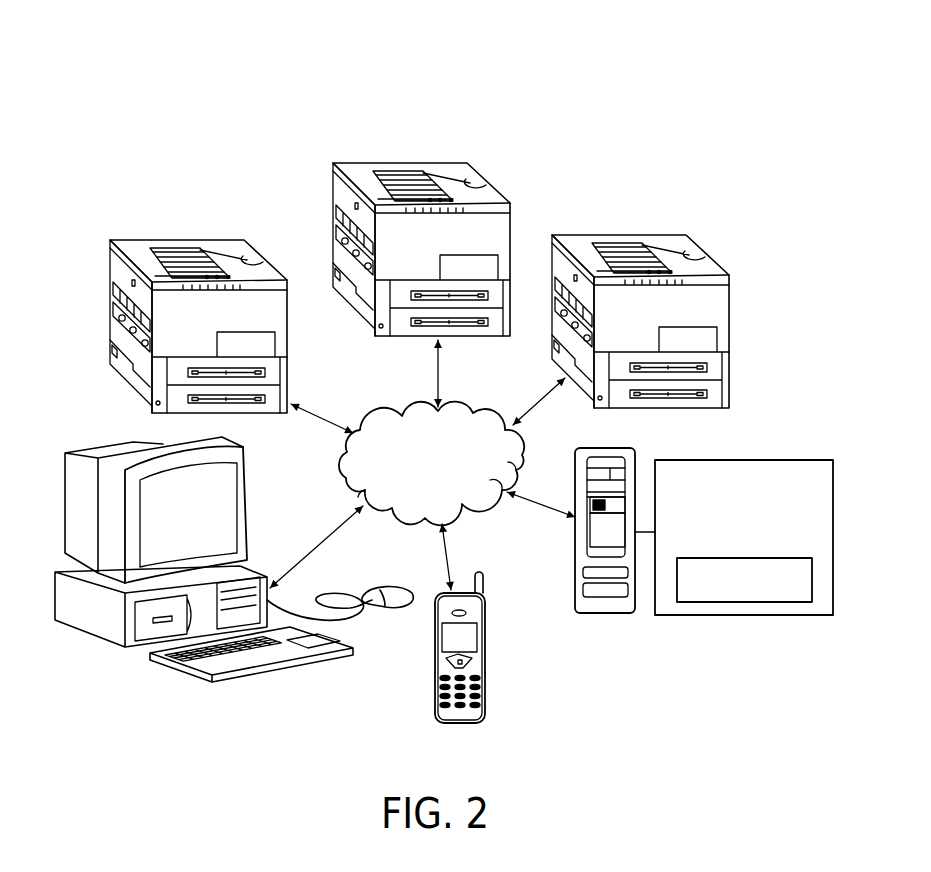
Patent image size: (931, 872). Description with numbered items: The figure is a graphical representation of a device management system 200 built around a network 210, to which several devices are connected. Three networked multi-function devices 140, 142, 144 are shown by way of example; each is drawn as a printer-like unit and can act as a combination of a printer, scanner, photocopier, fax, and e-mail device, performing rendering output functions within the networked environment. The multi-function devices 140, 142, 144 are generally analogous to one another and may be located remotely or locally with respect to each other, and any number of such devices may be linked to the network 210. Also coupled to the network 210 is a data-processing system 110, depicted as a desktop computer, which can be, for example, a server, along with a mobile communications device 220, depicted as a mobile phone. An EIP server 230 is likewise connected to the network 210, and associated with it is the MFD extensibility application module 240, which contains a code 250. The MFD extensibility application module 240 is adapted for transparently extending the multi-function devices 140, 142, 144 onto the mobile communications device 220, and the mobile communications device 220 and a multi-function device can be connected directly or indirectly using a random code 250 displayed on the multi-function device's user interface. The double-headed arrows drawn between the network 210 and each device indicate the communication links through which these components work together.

The device management system 200 is at (600, 68).
The data-processing system 110 is at (247, 482).
The multi-function device 140 is at (448, 162).
The multi-function device 142 is at (215, 238).
The multi-function device 144 is at (667, 233).
The network 210 is at (497, 405).
The mobile communications device 220 is at (485, 592).
The EIP server 230 is at (635, 453).
The MFD extensibility application module 240 is at (744, 532).
The random code 250 is at (723, 602).